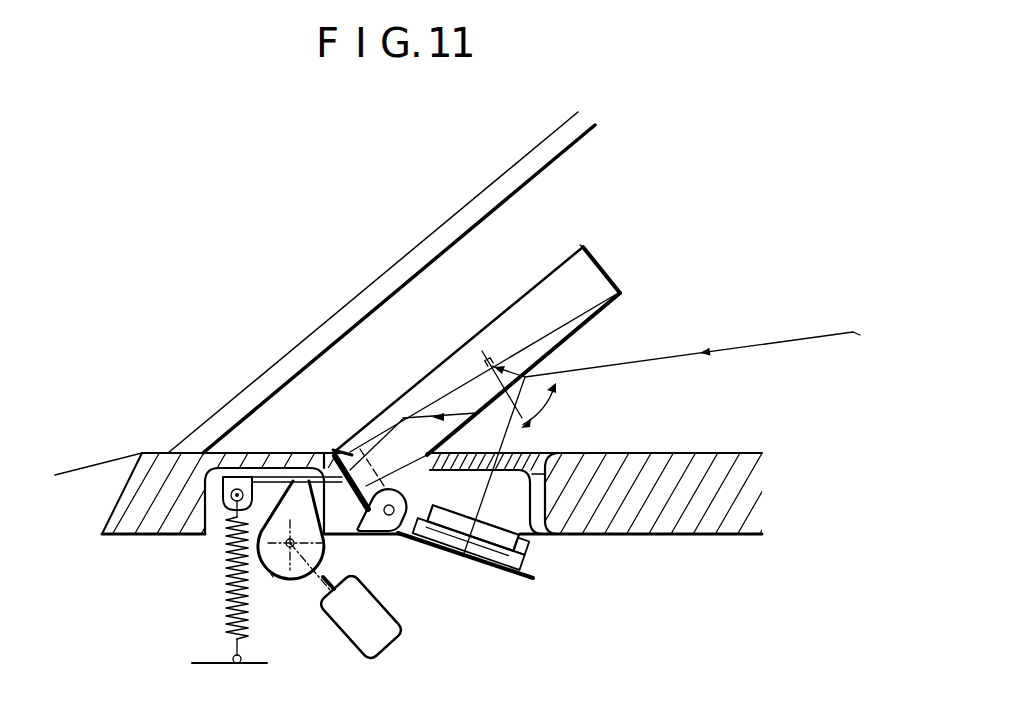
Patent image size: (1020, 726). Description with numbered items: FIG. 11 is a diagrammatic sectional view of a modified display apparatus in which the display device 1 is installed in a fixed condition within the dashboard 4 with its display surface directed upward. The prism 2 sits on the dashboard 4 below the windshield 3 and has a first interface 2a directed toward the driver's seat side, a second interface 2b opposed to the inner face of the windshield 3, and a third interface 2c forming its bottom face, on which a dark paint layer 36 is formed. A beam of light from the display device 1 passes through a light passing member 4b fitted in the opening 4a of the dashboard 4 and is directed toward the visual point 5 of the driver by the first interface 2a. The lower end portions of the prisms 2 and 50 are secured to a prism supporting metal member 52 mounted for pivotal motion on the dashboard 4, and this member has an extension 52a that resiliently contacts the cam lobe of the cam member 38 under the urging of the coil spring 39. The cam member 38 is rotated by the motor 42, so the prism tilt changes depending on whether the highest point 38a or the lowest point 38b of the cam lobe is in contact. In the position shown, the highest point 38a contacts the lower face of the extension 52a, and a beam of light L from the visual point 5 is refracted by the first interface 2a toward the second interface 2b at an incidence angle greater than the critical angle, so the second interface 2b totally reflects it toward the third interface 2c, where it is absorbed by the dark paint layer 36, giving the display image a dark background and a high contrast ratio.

The display device 1 is at (492, 556).
The prism 2 is at (563, 341).
The first interface 2a is at (622, 296).
The second interface 2b is at (604, 280).
The third interface 2c is at (355, 452).
The windshield 3 is at (510, 166).
The dashboard 4 is at (666, 527).
The opening 4a is at (531, 536).
The light passing member 4b is at (560, 453).
The visual point 5 is at (871, 327).
The paint layer 36 is at (335, 457).
The cam member 38 is at (324, 545).
The highest point of the cam lobe 38a is at (286, 478).
The lowest point of the cam lobe 38b is at (272, 576).
The coil spring 39 is at (228, 594).
The motor 42 is at (357, 641).
The prism 50 is at (590, 243).
The prism supporting metal member 52 is at (393, 530).
The extension 52a is at (257, 478).
The beam of light L is at (752, 345).